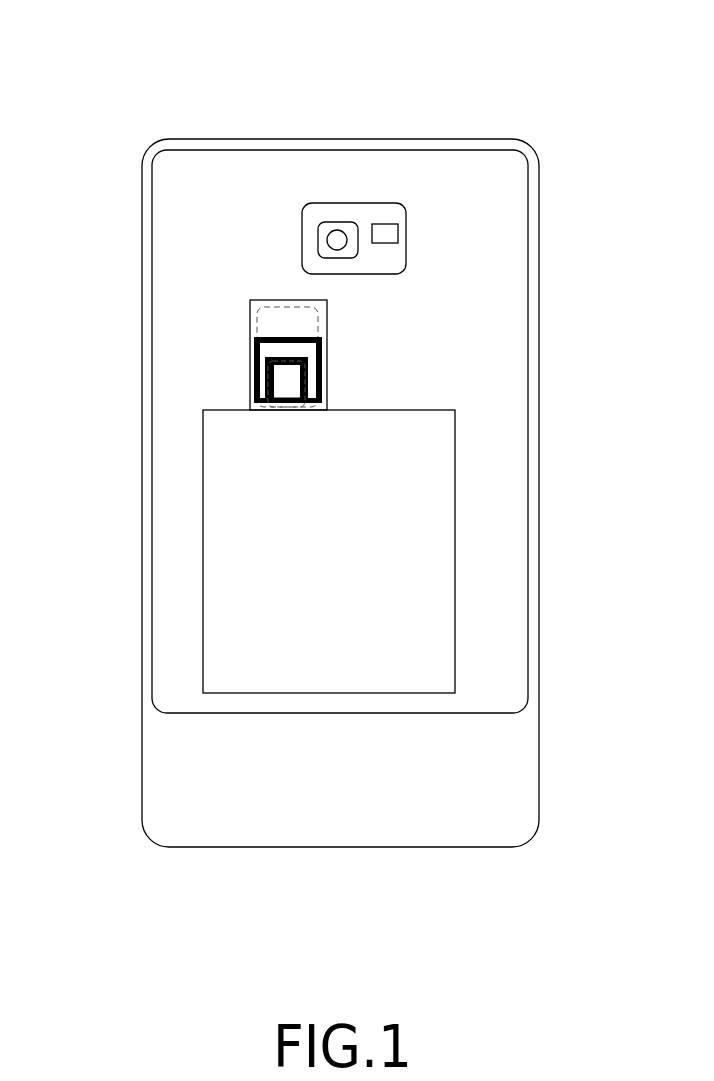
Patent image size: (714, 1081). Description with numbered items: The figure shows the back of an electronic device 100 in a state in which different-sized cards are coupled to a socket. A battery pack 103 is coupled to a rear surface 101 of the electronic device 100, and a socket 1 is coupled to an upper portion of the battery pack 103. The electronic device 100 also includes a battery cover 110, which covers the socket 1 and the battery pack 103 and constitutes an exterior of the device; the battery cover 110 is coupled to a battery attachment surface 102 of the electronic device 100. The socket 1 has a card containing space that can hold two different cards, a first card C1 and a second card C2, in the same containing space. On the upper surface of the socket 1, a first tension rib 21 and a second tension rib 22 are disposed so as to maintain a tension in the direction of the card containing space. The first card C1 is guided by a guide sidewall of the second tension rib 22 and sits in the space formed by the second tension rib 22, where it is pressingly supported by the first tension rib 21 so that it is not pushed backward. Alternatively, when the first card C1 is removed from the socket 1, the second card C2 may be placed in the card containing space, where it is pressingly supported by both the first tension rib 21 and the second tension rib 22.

The electronic device 100 is at (552, 78).
The rear surface 101 is at (160, 796).
The battery cover 110 is at (155, 705).
The battery attachment surface 102 is at (446, 358).
The battery pack 103 is at (455, 533).
The socket 1 is at (265, 300).
The second card C2 is at (262, 316).
The second tension rib 22 is at (272, 349).
The first tension rib 21 is at (282, 383).
The first card C1 is at (269, 388).